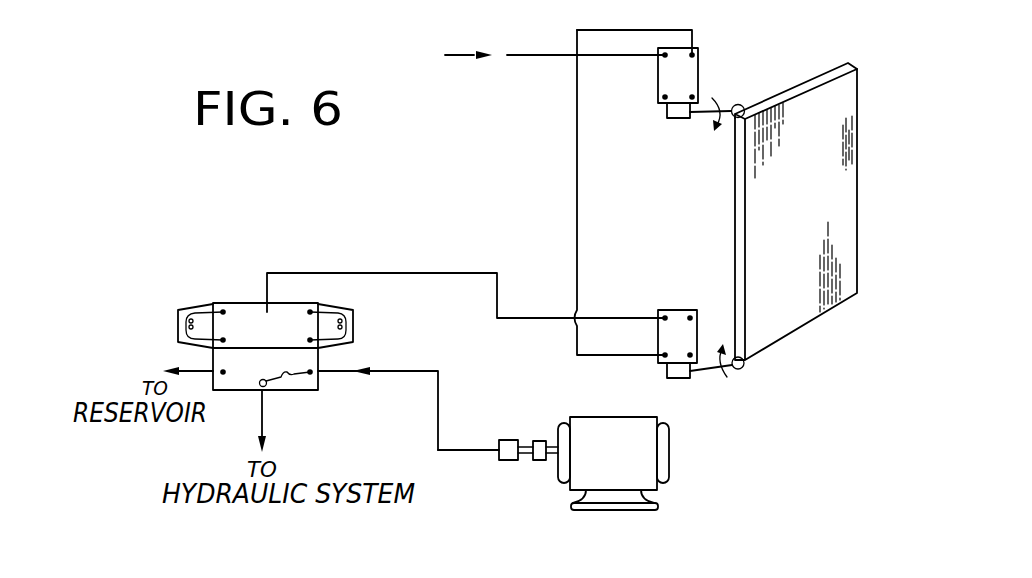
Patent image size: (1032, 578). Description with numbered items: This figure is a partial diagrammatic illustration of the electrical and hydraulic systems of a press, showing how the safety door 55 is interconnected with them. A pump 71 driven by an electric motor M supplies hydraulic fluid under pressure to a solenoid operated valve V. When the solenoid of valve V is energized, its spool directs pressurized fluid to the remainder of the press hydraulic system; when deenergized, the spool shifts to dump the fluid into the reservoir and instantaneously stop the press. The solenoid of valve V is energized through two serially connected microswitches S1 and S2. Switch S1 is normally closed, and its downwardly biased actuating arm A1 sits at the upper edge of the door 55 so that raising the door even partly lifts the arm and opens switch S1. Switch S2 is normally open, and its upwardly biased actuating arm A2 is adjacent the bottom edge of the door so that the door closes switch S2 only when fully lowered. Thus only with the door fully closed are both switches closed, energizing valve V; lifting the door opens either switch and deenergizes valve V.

The microswitch S1 is at (698, 77).
The actuating arm A1 is at (724, 108).
The microswitch S2 is at (675, 310).
The actuating arm A2 is at (710, 368).
The safety door 55 is at (862, 161).
The solenoid operated valve V is at (237, 390).
The pump 71 is at (507, 440).
The electric motor M is at (668, 432).